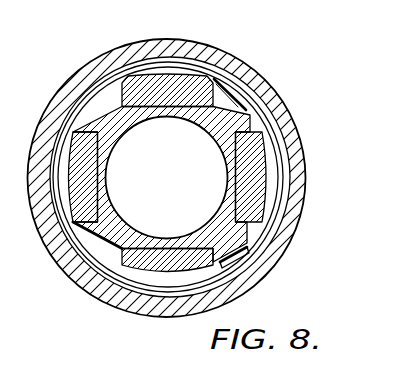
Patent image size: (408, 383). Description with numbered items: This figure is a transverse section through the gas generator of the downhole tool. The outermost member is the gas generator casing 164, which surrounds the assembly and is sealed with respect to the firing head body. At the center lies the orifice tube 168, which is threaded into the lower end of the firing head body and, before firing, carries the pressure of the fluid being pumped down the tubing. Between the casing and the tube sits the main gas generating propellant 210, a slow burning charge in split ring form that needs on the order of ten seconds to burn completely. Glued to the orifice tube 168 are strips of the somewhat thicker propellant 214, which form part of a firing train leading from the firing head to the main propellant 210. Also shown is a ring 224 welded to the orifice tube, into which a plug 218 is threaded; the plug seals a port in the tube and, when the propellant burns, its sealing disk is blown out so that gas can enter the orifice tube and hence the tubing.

The gas generator casing 164 is at (279, 243).
The propellant 210 is at (98, 107).
The propellant 214 is at (174, 76).
The orifice tube 168 is at (153, 239).
The ring 224 is at (239, 106).
The plug 218 is at (237, 253).